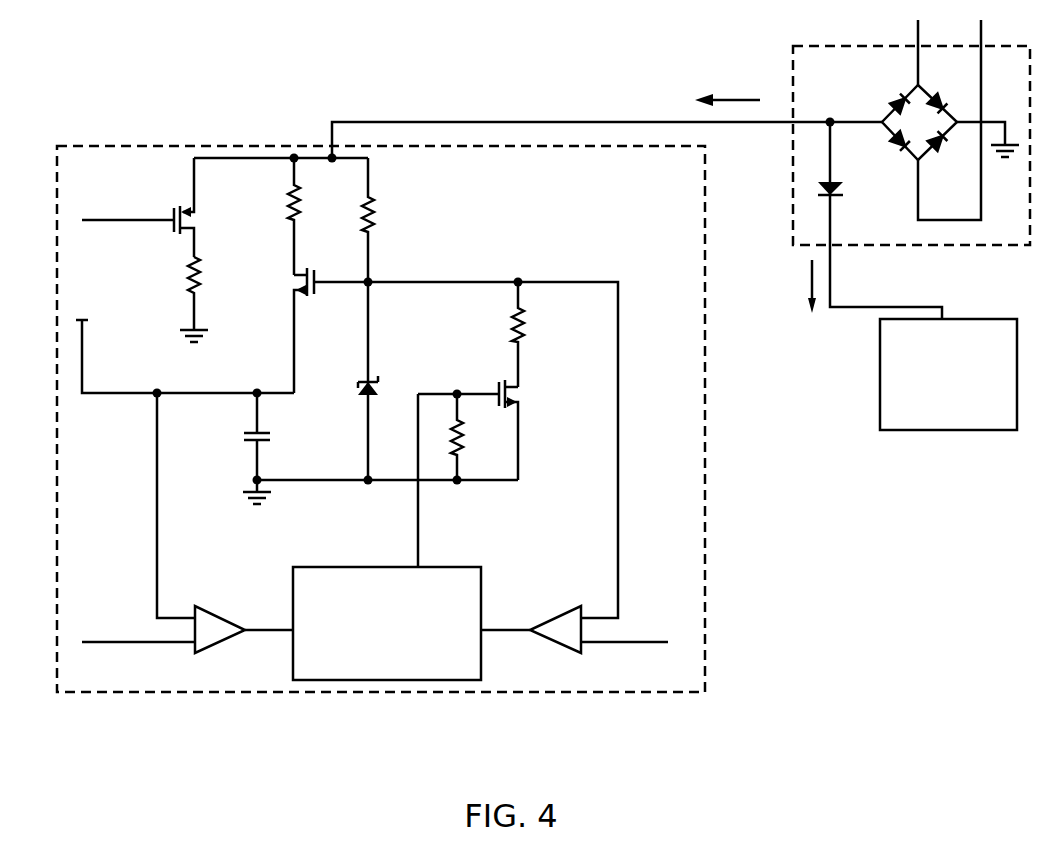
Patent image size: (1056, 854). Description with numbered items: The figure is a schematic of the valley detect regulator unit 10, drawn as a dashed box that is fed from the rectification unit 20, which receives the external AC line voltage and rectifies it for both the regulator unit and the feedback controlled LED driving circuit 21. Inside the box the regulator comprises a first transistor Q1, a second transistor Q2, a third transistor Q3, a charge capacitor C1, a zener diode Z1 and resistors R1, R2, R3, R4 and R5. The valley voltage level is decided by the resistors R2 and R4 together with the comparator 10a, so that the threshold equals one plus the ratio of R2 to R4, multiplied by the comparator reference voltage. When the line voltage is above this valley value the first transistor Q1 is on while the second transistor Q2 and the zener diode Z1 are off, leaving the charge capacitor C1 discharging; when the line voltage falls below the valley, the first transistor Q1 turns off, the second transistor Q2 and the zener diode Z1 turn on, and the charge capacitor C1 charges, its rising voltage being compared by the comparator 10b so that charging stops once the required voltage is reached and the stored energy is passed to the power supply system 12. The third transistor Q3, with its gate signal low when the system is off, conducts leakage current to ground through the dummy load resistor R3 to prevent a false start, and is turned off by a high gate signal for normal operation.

The valley detect regulator unit 10 is at (381, 419).
The 1.2V comparator 10a is at (218, 645).
The 12V comparator 10b is at (557, 645).
The power supply system 12 is at (380, 692).
The rectification unit 20 is at (911, 169).
The feedback controlled LED driving circuit 21 is at (948, 374).
The first transistor Q1 is at (493, 428).
The second transistor Q2 is at (304, 329).
The third transistor Q3 is at (138, 207).
The resistor R1 is at (271, 216).
The resistor R2 is at (347, 319).
The dummy load resistor R3 is at (174, 299).
The resistor R4 is at (495, 334).
The resistor R5 is at (476, 437).
The charge capacitor C1 is at (235, 448).
The zener diode Z1 is at (346, 386).